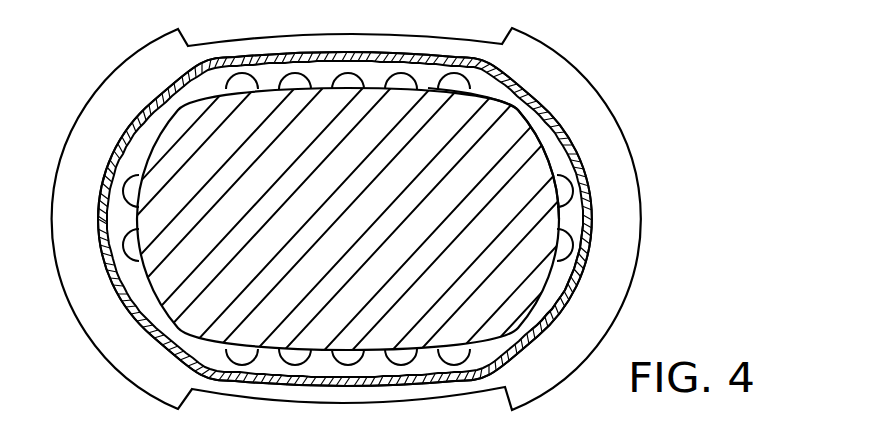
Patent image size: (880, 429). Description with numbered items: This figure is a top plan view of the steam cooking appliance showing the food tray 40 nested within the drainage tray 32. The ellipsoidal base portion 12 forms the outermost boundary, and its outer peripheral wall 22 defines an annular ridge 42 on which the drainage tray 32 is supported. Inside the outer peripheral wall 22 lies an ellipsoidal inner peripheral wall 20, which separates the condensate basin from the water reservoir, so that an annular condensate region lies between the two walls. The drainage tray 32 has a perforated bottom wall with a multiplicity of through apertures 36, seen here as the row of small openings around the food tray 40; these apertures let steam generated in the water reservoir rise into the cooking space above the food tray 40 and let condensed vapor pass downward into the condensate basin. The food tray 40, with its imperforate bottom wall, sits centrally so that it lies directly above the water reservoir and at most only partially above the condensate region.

The base portion 12 is at (628, 148).
The inner peripheral wall 20 is at (589, 183).
The outer peripheral wall 22 is at (558, 304).
The drainage tray 32 is at (575, 130).
The through apertures 36 is at (572, 240).
The food tray 40 is at (535, 132).
The annular ridge 42 is at (173, 265).